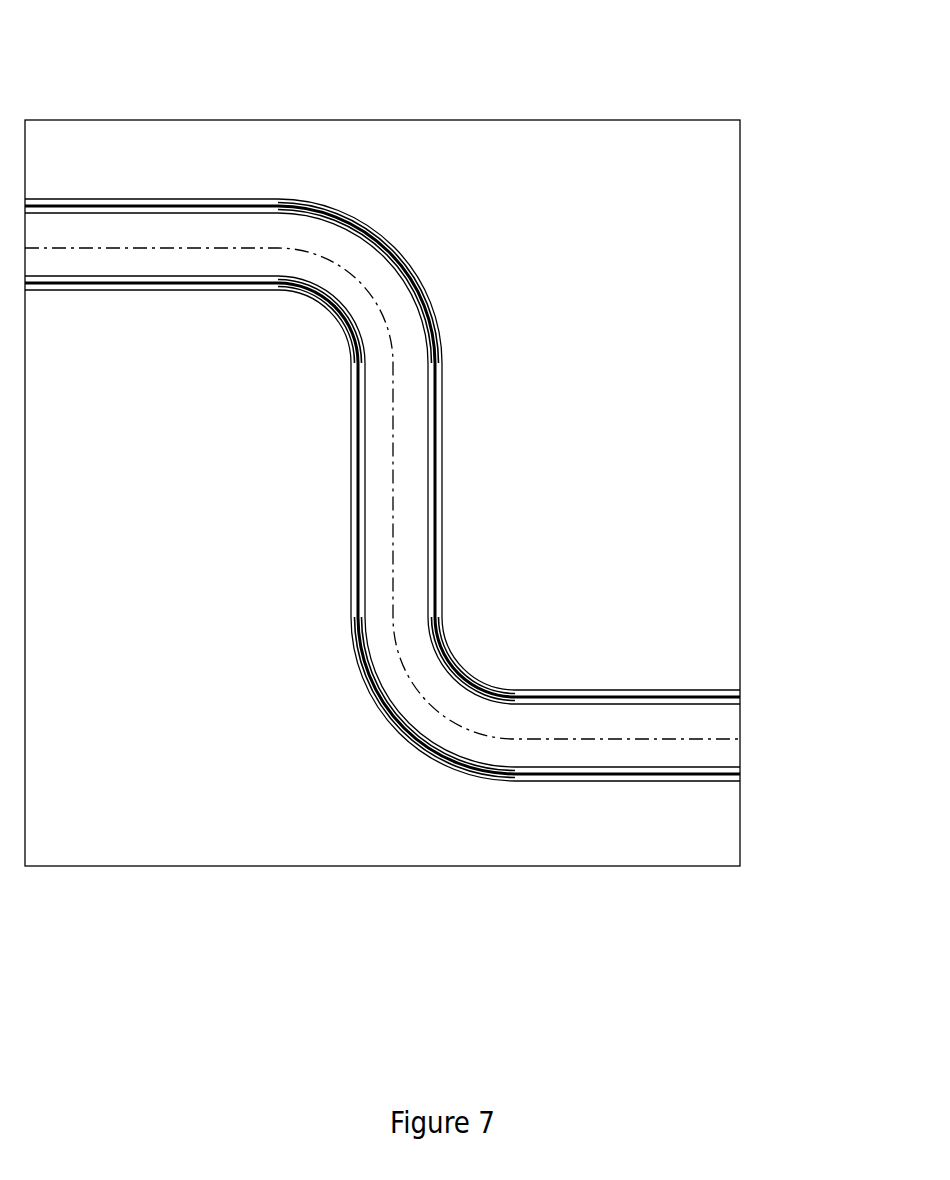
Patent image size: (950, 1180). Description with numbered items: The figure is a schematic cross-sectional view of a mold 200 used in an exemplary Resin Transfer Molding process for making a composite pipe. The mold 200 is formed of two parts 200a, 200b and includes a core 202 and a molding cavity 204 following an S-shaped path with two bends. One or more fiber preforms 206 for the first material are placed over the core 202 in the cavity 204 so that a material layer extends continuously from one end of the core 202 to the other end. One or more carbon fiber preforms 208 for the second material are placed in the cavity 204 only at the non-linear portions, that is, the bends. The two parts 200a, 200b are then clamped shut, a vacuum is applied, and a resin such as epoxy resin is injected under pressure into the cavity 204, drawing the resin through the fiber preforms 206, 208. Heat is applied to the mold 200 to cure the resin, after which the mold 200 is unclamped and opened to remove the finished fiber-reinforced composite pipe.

The mold 200 is at (220, 912).
The first mold part 200a is at (597, 330).
The second mold part 200b is at (181, 593).
The core 202 is at (679, 723).
The molding cavity 204 is at (132, 208).
The fiber preforms 206 is at (158, 205).
The carbon fiber preforms 208 is at (335, 211).